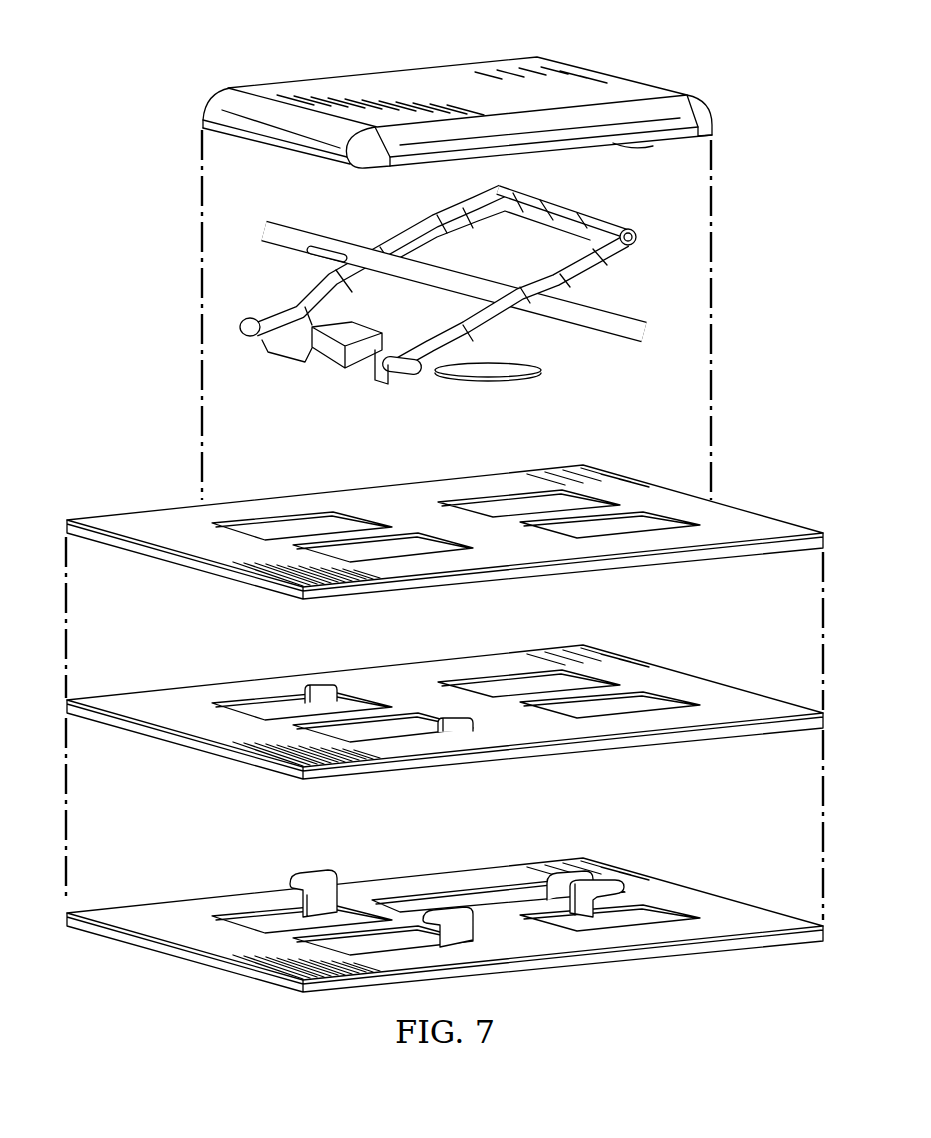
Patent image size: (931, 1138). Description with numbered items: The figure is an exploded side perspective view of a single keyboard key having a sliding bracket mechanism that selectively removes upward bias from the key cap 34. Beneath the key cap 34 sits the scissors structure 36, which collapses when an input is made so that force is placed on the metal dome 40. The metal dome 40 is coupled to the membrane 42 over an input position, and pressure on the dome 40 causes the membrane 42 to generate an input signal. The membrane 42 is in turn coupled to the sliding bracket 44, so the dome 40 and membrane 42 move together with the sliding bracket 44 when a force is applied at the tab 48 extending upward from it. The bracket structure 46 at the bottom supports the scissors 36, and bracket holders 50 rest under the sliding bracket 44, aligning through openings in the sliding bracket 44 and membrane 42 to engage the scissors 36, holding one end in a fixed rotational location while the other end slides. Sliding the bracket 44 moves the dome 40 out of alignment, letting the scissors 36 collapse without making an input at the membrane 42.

The key cap 34 is at (382, 80).
The scissors structure 36 is at (643, 332).
The metal dome 40 is at (482, 382).
The membrane 42 is at (145, 515).
The sliding bracket 44 is at (183, 692).
The bracket structure 46 is at (183, 905).
The tab 48 is at (318, 682).
The bracket holder 50 is at (317, 870).